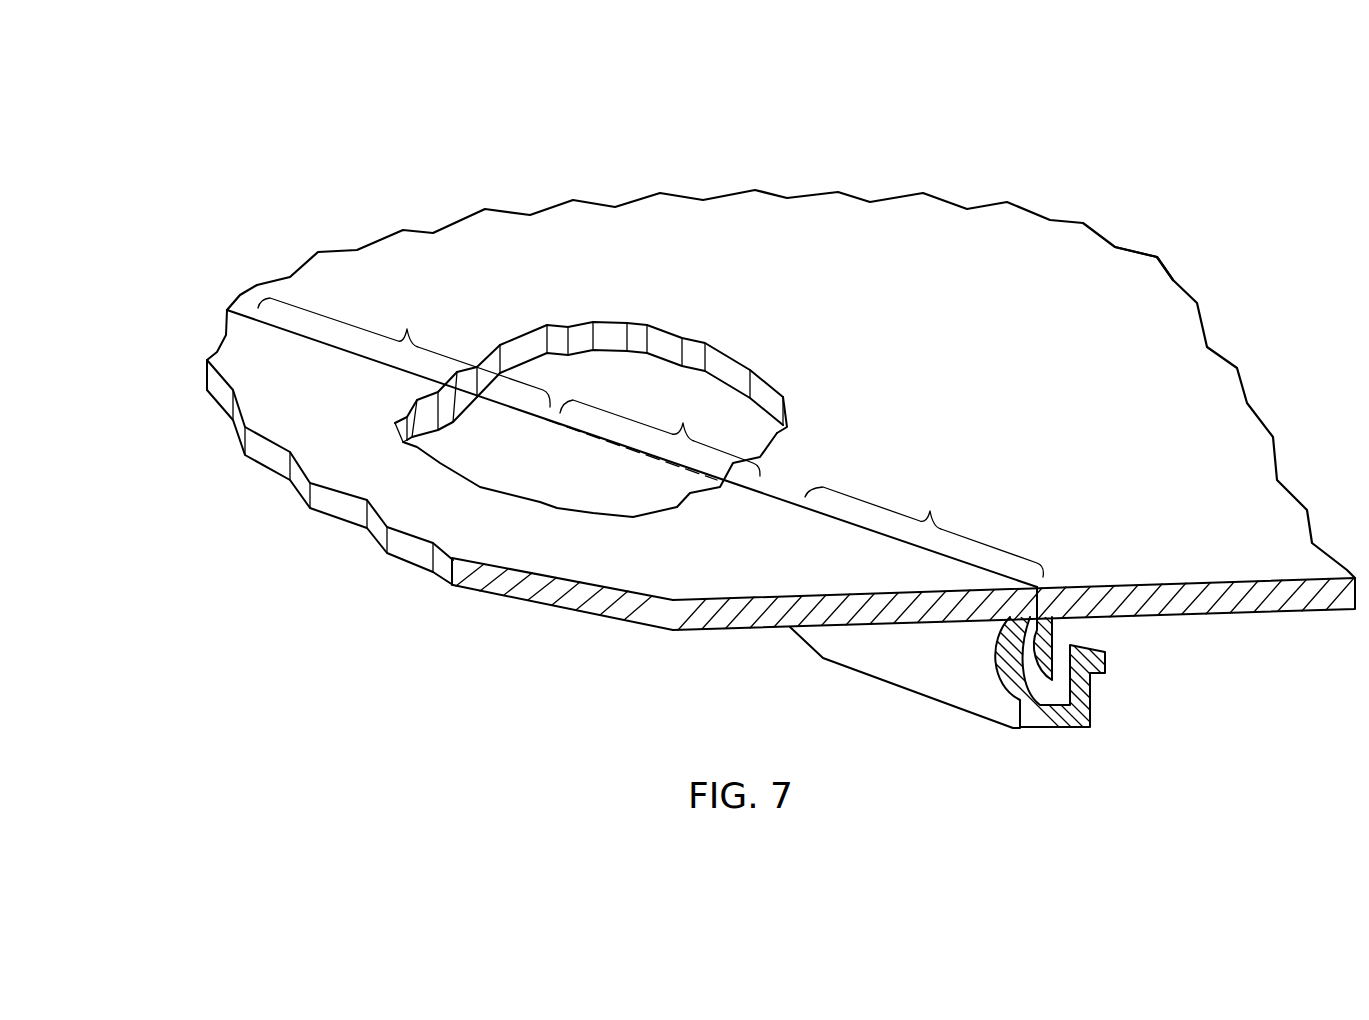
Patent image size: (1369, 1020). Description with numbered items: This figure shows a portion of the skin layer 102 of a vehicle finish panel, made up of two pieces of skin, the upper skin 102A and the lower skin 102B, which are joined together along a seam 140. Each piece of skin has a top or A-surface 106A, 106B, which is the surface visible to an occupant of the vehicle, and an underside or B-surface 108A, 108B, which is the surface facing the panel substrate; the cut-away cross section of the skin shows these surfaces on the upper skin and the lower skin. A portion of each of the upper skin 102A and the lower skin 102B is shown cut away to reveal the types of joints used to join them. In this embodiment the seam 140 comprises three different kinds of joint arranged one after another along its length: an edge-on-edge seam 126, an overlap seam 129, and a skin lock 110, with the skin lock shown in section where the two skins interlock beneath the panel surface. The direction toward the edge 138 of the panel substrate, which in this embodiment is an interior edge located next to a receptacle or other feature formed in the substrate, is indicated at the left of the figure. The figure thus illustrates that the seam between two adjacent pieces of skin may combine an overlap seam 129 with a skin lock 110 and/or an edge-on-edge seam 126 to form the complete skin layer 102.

The skin layer 102 is at (791, 342).
The upper skin 102A is at (695, 366).
The lower skin 102B is at (136, 350).
The A-surface of upper skin 106A is at (1118, 267).
The A-surface of lower skin 106B is at (353, 482).
The B-surface of upper skin 108A is at (1317, 609).
The B-surface of lower skin 108B is at (600, 615).
The skin lock 110 is at (924, 531).
The edge-on-edge seam 126 is at (404, 352).
The overlap seam 129 is at (660, 438).
The edge 138 is at (212, 305).
The seam 140 is at (597, 444).